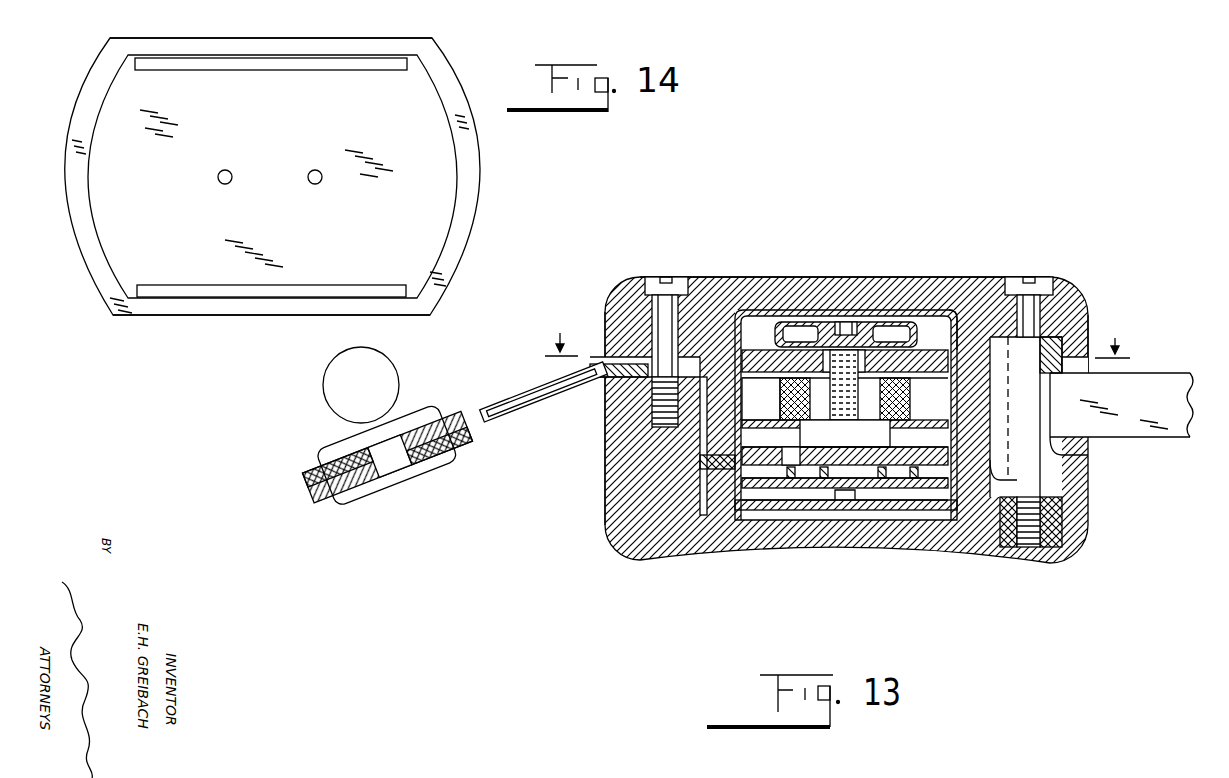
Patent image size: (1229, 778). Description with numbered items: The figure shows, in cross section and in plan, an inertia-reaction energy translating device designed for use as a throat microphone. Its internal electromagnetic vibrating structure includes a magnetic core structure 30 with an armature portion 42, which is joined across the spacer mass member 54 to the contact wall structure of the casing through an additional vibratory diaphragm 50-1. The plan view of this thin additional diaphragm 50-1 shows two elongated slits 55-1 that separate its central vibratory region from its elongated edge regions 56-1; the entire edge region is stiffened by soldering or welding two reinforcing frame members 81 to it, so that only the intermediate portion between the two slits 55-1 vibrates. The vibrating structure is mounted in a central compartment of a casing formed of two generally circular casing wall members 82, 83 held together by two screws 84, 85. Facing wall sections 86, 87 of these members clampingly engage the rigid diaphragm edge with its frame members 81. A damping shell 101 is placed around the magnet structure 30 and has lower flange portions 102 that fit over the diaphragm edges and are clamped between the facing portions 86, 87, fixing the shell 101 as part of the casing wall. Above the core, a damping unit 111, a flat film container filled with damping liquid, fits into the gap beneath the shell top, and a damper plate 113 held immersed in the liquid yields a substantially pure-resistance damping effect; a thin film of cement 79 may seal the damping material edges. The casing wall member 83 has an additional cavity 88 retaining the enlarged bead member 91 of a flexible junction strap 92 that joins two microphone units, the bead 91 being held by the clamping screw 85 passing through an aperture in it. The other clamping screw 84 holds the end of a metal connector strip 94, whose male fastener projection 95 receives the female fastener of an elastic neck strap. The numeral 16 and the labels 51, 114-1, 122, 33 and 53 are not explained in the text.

In FIG. 14, the reinforcing frame member 81 is at (238, 46).
In FIG. 13, the reinforcing frame member 81 is at (616, 535).
In FIG. 14, the elongated slit 55-1 is at (220, 68).
In FIG. 14, the elongated edge region 56-1 is at (323, 44).
In FIG. 13, the elongated edge region 56-1 is at (720, 525).
In FIG. 14, the base plate 51 is at (433, 160).
In FIG. 13, the casing wall member 83 is at (735, 283).
In FIG. 13, the casing wall member 82 is at (615, 500).
In FIG. 13, the screw 84 is at (657, 310).
In FIG. 13, the screw 85 is at (1028, 305).
In FIG. 13, the facing wall section 86 is at (955, 545).
In FIG. 13, the facing wall section 87 is at (1060, 455).
In FIG. 13, the cavity 88 is at (1050, 325).
In FIG. 13, the bead member 91 is at (1044, 358).
In FIG. 13, the junction strap 92 is at (1142, 383).
In FIG. 13, the connector strip 94 is at (548, 382).
In FIG. 13, the male fastener projection 95 is at (330, 375).
In FIG. 13, the section line 16 is at (837, 334).
In FIG. 13, the shell 101 is at (755, 332).
In FIG. 13, the flange portion 102 is at (700, 462).
In FIG. 13, the damper plate 113 is at (790, 335).
In FIG. 13, the window 114-1 is at (872, 320).
In FIG. 13, the adjusting screw 122 is at (918, 337).
In FIG. 13, the damping unit 111 is at (923, 307).
In FIG. 13, the magnetic core structure 30 is at (766, 408).
In FIG. 13, the coil 33 is at (904, 396).
In FIG. 13, the armature portion 42 is at (822, 465).
In FIG. 13, the rotor plate 53 is at (835, 505).
In FIG. 13, the film of cement 79 is at (850, 490).
In FIG. 13, the spacer mass member 54 is at (892, 490).
In FIG. 13, the additional diaphragm 50-1 is at (785, 500).